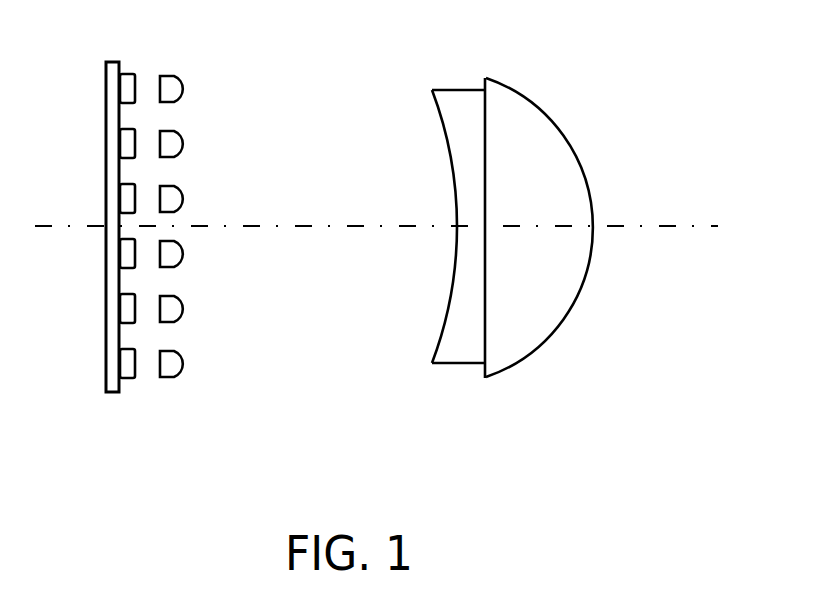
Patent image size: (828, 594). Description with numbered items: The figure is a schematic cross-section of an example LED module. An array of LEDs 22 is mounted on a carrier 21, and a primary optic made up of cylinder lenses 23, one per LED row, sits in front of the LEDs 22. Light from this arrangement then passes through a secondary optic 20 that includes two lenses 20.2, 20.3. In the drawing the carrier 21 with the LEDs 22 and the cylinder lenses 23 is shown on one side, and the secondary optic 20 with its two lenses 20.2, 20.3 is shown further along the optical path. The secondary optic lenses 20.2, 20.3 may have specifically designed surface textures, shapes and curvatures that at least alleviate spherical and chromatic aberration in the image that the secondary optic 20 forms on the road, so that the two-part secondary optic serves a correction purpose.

The secondary optic 20 is at (560, 203).
The secondary optic lens 20.2 is at (457, 108).
The secondary optic lens 20.3 is at (542, 135).
The carrier 21 is at (111, 378).
The LEDs 22 is at (127, 84).
The cylinder lenses 23 is at (177, 85).